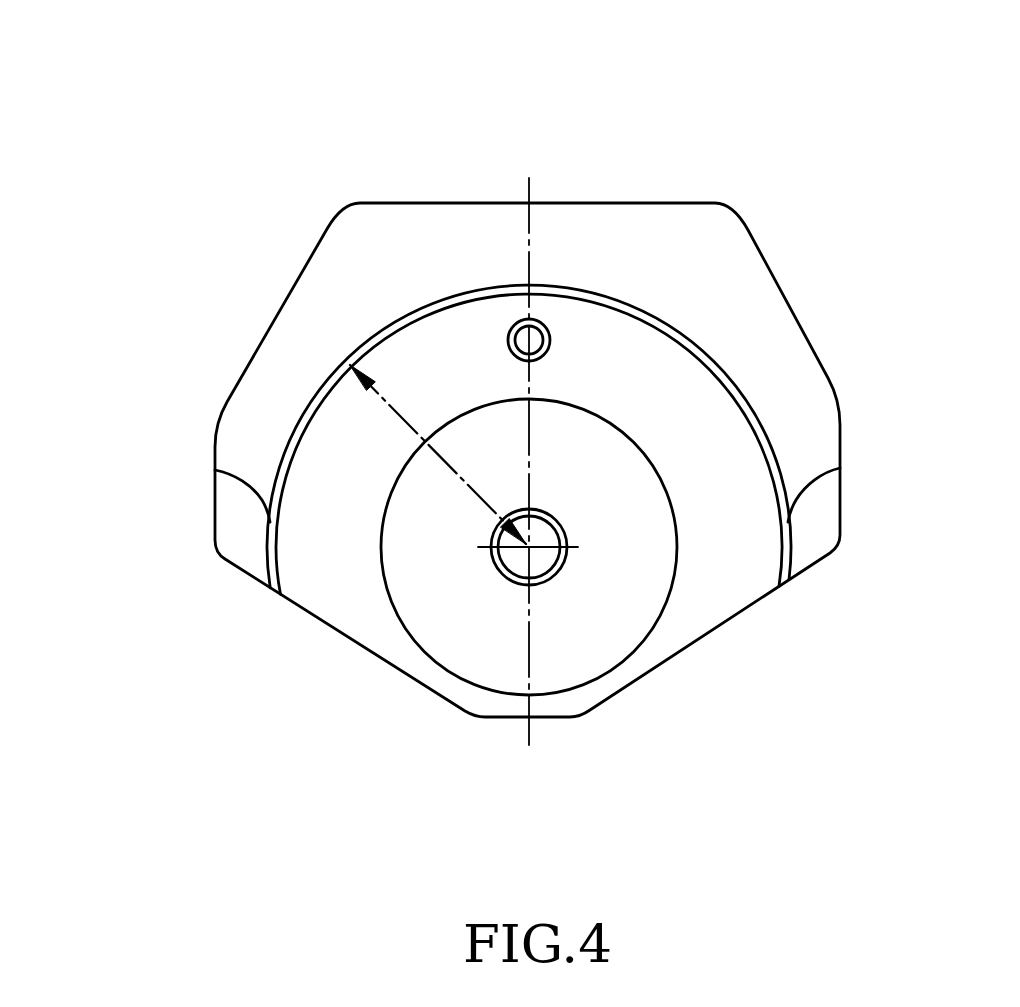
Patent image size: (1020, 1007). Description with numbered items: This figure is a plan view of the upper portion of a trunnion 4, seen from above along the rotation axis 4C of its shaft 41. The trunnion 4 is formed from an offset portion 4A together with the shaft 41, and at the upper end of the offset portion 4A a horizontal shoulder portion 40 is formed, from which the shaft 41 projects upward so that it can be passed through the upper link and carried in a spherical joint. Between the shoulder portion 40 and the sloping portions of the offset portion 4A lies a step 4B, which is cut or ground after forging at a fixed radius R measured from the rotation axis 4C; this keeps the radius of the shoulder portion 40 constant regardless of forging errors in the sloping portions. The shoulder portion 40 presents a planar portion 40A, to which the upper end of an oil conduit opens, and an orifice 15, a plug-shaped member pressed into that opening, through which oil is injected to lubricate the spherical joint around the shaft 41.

The trunnion 4 is at (487, 421).
The offset portion 4A is at (423, 220).
The step 4B is at (627, 303).
The rotation axis 4C is at (531, 549).
The orifice 15 is at (553, 343).
The shoulder portion 40 is at (668, 359).
The planar portion 40A is at (283, 553).
The shaft 41 is at (417, 640).